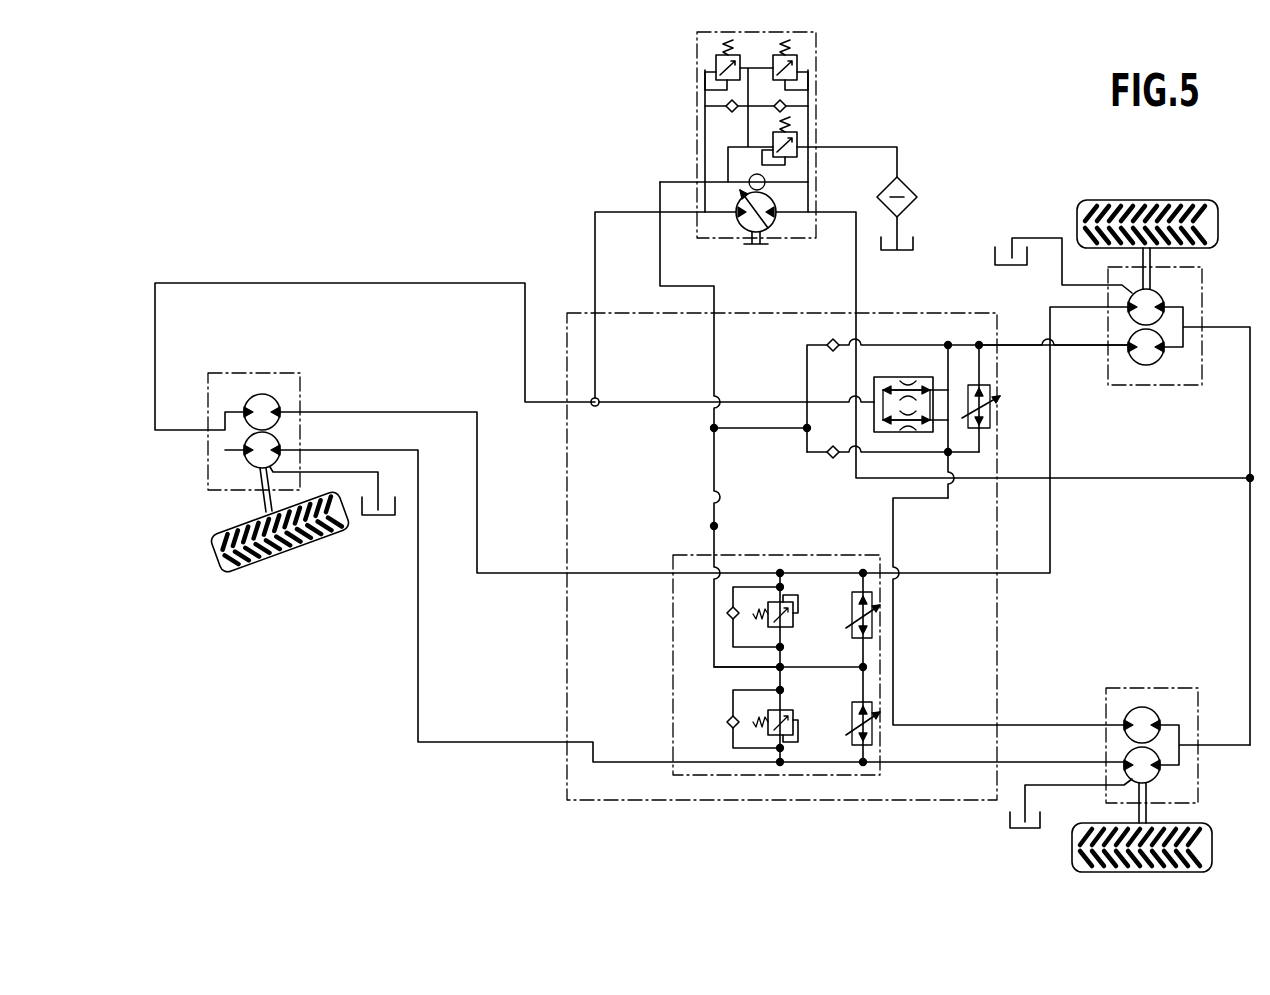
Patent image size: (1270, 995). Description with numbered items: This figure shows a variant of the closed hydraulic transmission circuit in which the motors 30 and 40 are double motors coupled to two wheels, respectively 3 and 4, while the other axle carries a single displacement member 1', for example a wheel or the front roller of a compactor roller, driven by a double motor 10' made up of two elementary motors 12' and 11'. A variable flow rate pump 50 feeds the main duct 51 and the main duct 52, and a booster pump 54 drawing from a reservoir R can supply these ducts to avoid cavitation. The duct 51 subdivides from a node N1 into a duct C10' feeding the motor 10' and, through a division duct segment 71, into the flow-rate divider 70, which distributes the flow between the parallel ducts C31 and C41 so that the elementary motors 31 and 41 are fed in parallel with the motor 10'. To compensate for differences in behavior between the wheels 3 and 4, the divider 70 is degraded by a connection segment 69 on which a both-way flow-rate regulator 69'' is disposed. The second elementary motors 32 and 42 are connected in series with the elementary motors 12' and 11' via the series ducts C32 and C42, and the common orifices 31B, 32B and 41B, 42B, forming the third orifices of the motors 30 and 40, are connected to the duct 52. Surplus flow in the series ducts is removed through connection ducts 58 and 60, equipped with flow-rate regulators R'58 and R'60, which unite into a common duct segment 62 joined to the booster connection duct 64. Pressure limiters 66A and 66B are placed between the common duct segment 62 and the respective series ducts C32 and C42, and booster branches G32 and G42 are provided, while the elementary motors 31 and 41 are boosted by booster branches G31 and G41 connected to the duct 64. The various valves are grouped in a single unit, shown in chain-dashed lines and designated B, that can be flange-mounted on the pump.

The single displacement member 1' is at (279, 526).
The wheel 3 is at (1140, 199).
The wheel 4 is at (1214, 850).
The double motor 10' is at (224, 431).
The elementary motor 11' is at (319, 466).
The elementary motor 12' is at (265, 380).
The hydraulic motor 30 is at (1202, 272).
The elementary motor 31 is at (1148, 355).
The common orifice 31B is at (1165, 345).
The elementary motor 32 is at (1140, 312).
The common orifice 32B is at (1165, 305).
The hydraulic motor 40 is at (1112, 688).
The elementary motor 41 is at (1146, 712).
The common orifice 41B is at (1160, 722).
The elementary motor 42 is at (1152, 775).
The common orifice 42B is at (1162, 766).
The variable flow rate pump 50 is at (762, 232).
The main duct 51 is at (628, 212).
The main duct 52 is at (856, 285).
The booster pump 54 is at (765, 180).
The connection duct 58 is at (866, 648).
The connection duct 60 is at (868, 690).
The common duct segment 62 is at (842, 667).
The booster connection duct 64 is at (716, 372).
The pressure limiter 66A is at (795, 620).
The pressure limiter 66B is at (795, 728).
The connection segment 69 is at (1000, 397).
The both-way flow-rate regulator 69'' is at (1002, 411).
The flow-rate divider 70 is at (905, 377).
The division duct segment 71 is at (654, 400).
The valve unit B is at (680, 800).
The node N1 is at (596, 407).
The reservoir R is at (869, 198).
The flow-rate regulator R'58 is at (898, 613).
The flow-rate regulator R'60 is at (895, 730).
The duct C10' is at (375, 344).
The parallel duct C31 is at (1026, 345).
The series duct C32 is at (596, 573).
The parallel duct C41 is at (1048, 725).
The series duct C42 is at (628, 762).
The booster branch G31 is at (807, 360).
The booster branch G32 is at (713, 632).
The booster branch G41 is at (807, 452).
The booster branch G42 is at (713, 692).